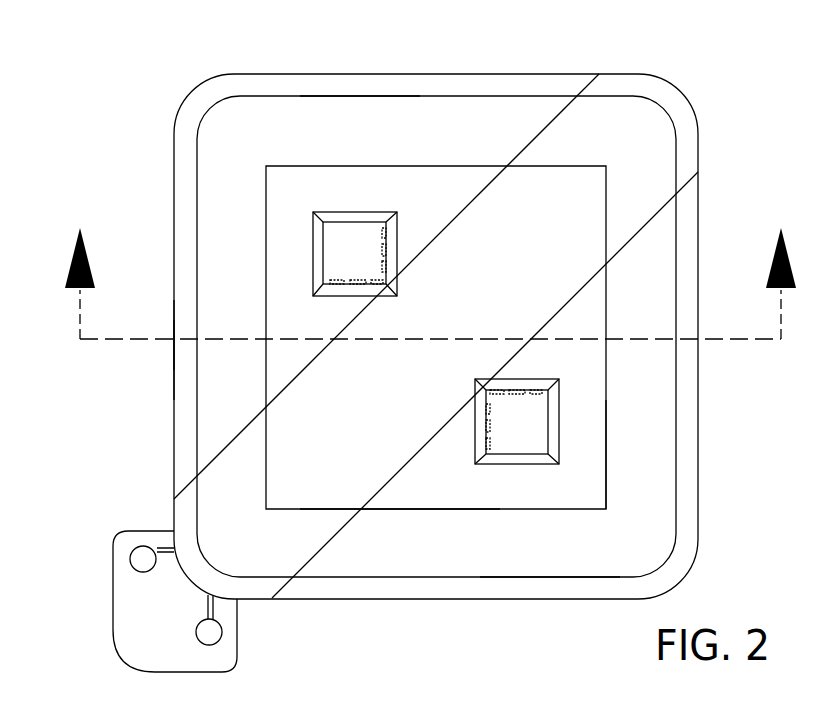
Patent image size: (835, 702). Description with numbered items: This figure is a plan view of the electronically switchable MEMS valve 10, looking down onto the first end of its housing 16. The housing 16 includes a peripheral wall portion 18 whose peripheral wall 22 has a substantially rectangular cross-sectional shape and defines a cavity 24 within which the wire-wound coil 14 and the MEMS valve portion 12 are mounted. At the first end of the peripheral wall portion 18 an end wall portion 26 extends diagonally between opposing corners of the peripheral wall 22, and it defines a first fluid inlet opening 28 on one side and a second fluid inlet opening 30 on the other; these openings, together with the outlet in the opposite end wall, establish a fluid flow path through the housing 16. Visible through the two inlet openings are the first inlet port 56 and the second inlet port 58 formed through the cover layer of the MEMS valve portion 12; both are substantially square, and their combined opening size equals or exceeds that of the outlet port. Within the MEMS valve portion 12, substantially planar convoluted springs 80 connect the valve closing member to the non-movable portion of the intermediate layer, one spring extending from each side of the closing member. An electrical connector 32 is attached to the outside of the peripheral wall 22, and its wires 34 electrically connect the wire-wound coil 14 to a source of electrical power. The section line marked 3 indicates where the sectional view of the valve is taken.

The section line 3- 3 is at (430, 263).
The electronically switchable MEMS valve 10 is at (157, 58).
The MEMS valve portion 12 is at (613, 449).
The wire-wound coil 14 is at (645, 533).
The housing 16 is at (721, 164).
The peripheral wall portion 18 is at (168, 374).
The peripheral wall 22 is at (360, 85).
The cavity 24 is at (558, 565).
The end wall portion 26 is at (630, 97).
The first fluid inlet opening 28 is at (463, 185).
The second fluid inlet opening 30 is at (422, 493).
The electrical connector 32 is at (143, 633).
The wires 34 is at (143, 559).
The first inlet port 56 is at (357, 229).
The second inlet port 58 is at (510, 447).
The convoluted springs 80 is at (384, 245).